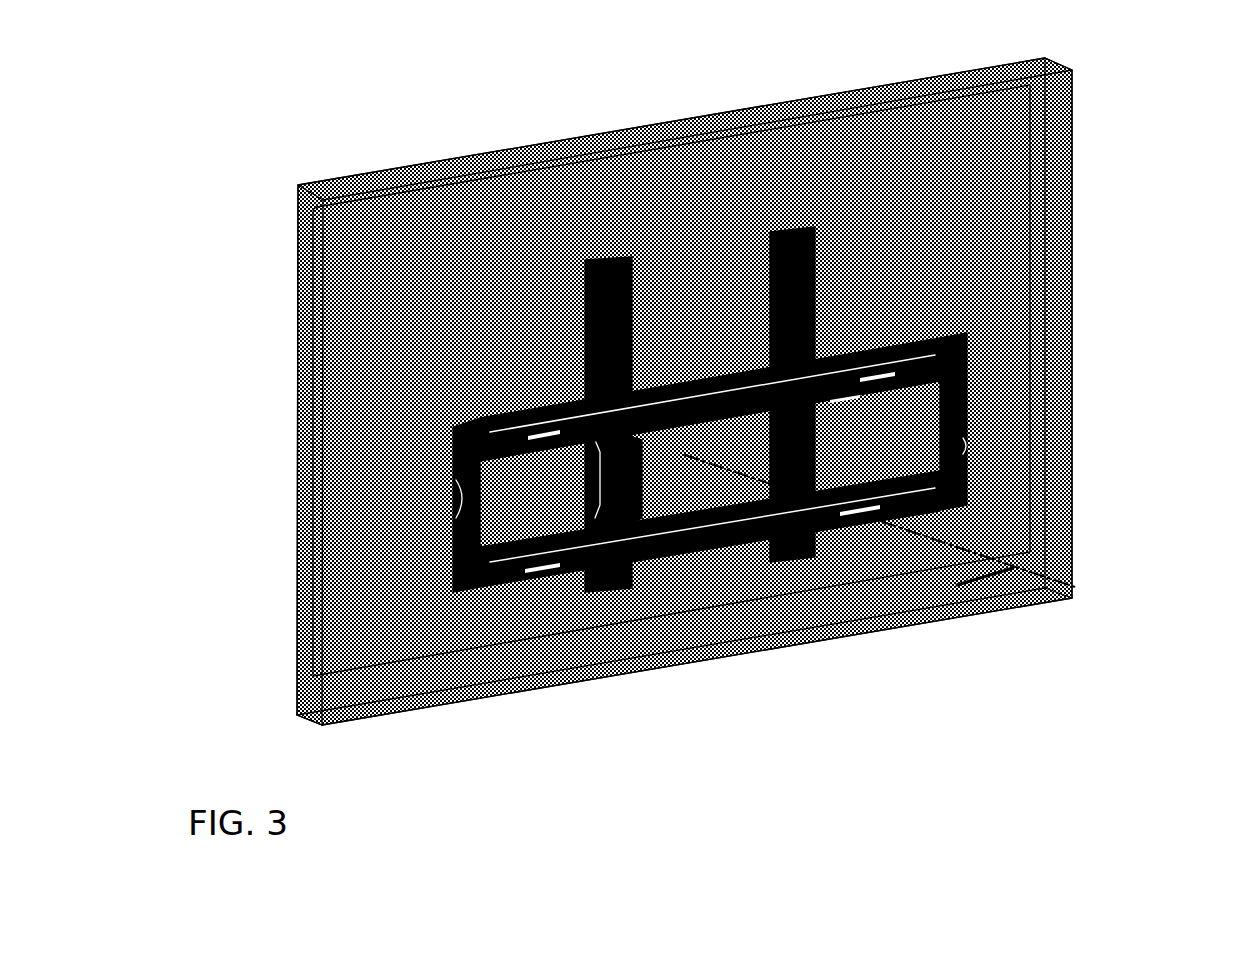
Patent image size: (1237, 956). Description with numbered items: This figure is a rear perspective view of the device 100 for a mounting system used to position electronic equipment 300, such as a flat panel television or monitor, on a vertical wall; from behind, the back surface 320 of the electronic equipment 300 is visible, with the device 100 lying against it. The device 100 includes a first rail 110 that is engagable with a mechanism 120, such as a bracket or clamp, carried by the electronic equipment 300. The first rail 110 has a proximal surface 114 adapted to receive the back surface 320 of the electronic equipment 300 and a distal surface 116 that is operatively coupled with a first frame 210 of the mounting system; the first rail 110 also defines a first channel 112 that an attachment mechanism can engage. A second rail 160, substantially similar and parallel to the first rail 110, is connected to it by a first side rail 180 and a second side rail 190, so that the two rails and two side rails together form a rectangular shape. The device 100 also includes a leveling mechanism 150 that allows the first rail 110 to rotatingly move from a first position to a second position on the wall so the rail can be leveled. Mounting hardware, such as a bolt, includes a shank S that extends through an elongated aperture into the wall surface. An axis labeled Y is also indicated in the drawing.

The device 100 is at (710, 343).
The first rail 110 is at (566, 404).
The first channel 112 is at (822, 353).
The proximal surface 114 is at (512, 405).
The distal surface 116 is at (905, 342).
The mechanism 120 is at (768, 357).
The leveling mechanism 150 is at (862, 416).
The second rail 160 is at (500, 585).
The first side rail 180 is at (453, 458).
The second side rail 190 is at (964, 350).
The first frame 210 is at (632, 275).
The electronic equipment 300 is at (1078, 150).
The back surface 320 is at (390, 252).
The shank S is at (612, 566).
The axis Y is at (880, 535).